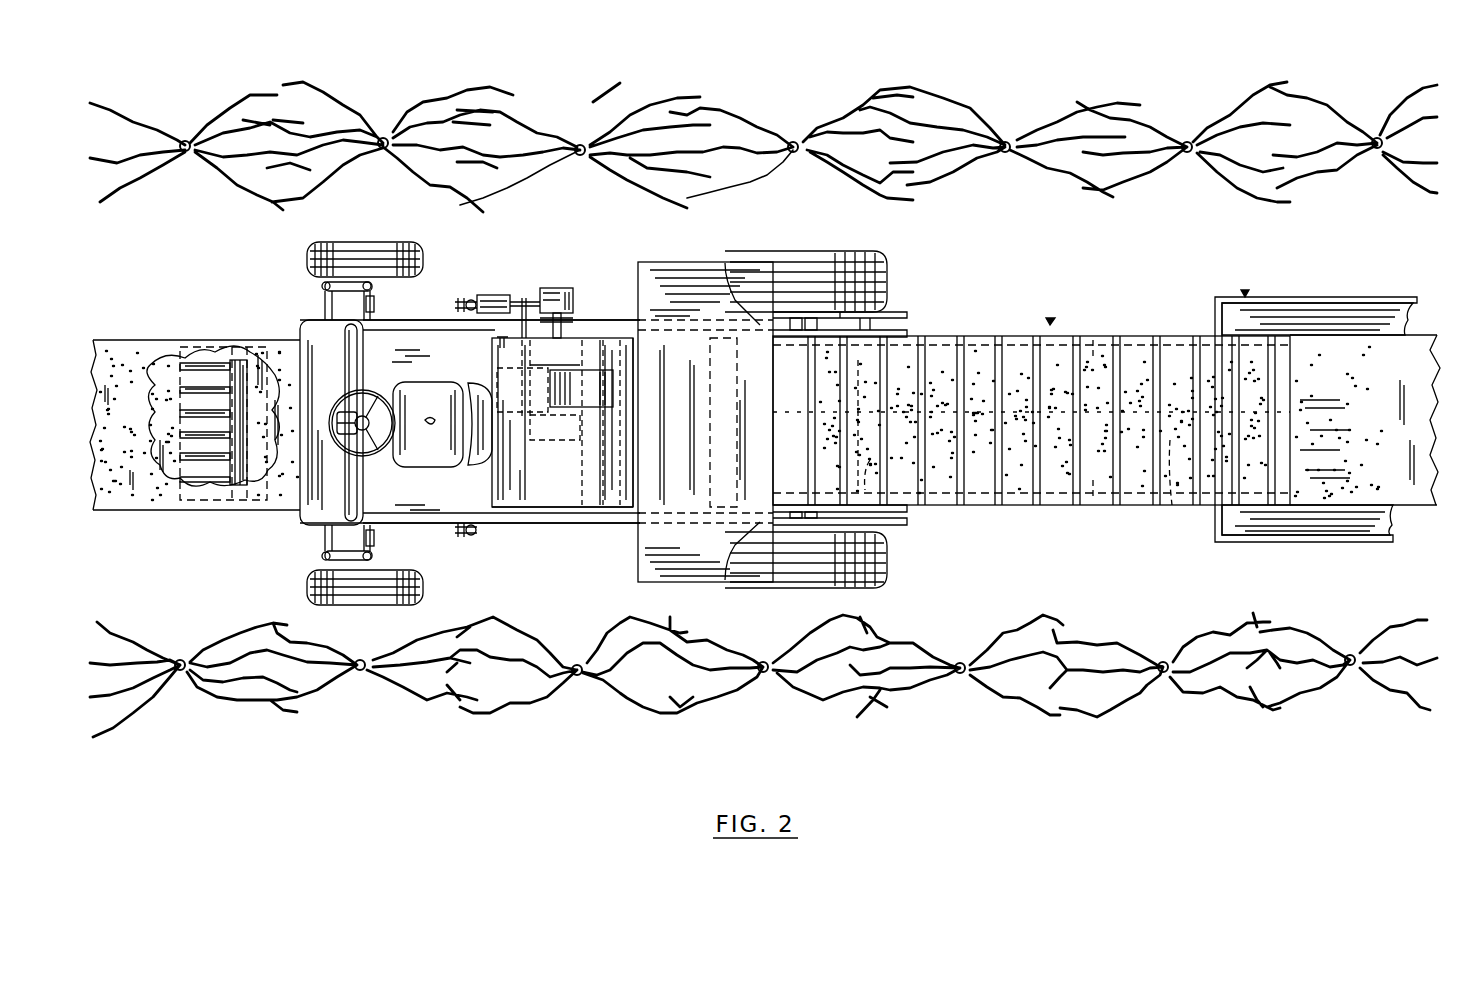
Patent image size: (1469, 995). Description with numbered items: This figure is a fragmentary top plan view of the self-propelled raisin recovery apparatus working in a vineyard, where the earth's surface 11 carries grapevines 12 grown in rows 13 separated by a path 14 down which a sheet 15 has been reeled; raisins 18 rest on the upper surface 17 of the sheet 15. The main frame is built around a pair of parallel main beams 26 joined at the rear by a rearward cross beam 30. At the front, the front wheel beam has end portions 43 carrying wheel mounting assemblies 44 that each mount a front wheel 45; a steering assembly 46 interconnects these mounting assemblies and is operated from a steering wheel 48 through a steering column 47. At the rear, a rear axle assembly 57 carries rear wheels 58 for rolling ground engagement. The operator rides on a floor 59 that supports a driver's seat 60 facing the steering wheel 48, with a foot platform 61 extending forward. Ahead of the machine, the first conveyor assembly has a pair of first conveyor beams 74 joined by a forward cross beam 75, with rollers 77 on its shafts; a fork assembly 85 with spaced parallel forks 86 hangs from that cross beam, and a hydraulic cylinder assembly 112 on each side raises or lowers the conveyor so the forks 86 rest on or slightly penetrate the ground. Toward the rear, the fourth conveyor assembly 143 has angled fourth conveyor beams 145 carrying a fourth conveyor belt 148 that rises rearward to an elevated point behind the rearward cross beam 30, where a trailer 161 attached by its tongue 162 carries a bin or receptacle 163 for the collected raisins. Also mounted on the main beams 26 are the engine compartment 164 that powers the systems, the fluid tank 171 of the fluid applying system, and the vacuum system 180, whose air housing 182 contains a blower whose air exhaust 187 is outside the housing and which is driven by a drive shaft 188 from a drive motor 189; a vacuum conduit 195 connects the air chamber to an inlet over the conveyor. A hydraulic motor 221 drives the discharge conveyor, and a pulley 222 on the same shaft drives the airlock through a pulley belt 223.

The earth's surface 11 is at (553, 748).
The grapevines 12 is at (383, 138).
The rows 13 is at (608, 92).
The path 14 is at (1385, 278).
The ground surface 15 is at (160, 340).
The upper surface 17 is at (150, 340).
The raisins 18 is at (150, 478).
The main beams 26 is at (620, 323).
The rearward cross beam 30 is at (910, 335).
The end portions 43 is at (378, 305).
The wheel mounting assemblies 44 is at (372, 288).
The front wheels 45 is at (345, 242).
The steering assembly 46 is at (325, 300).
The steering column 47 is at (347, 355).
The steering wheel 48 is at (370, 390).
The rear axle assembly 57 is at (875, 535).
The rear wheels 58 is at (820, 252).
The floor 59 is at (438, 360).
The driver's seat 60 is at (420, 455).
The foot platform 61 is at (318, 527).
The first conveyor beams 74 is at (247, 347).
The forward cross beam 75 is at (232, 505).
The rollers 77 is at (243, 427).
The fork assembly 85 is at (190, 355).
The forks 86 is at (200, 440).
The hydraulic cylinder assembly 112 is at (468, 302).
The fourth conveyor assembly 143 is at (1050, 324).
The fourth conveyor beams 145 is at (1093, 340).
The fourth conveyor belt 148 is at (1108, 505).
The trailer 161 is at (1245, 296).
The tongue 162 is at (1172, 506).
The bin or receptacle 163 is at (1320, 303).
The engine compartment 164 is at (664, 431).
The fluid tank 171 is at (865, 490).
The vacuum system 180 is at (563, 509).
The air housing 182 is at (538, 489).
The air exhaust 187 is at (613, 388).
The drive shaft 188 is at (560, 325).
The drive motor 189 is at (556, 288).
The vacuum conduit 195 is at (633, 362).
The hydraulic motor 221 is at (490, 295).
The pulley 222 is at (523, 300).
The pulley belt 223 is at (505, 342).